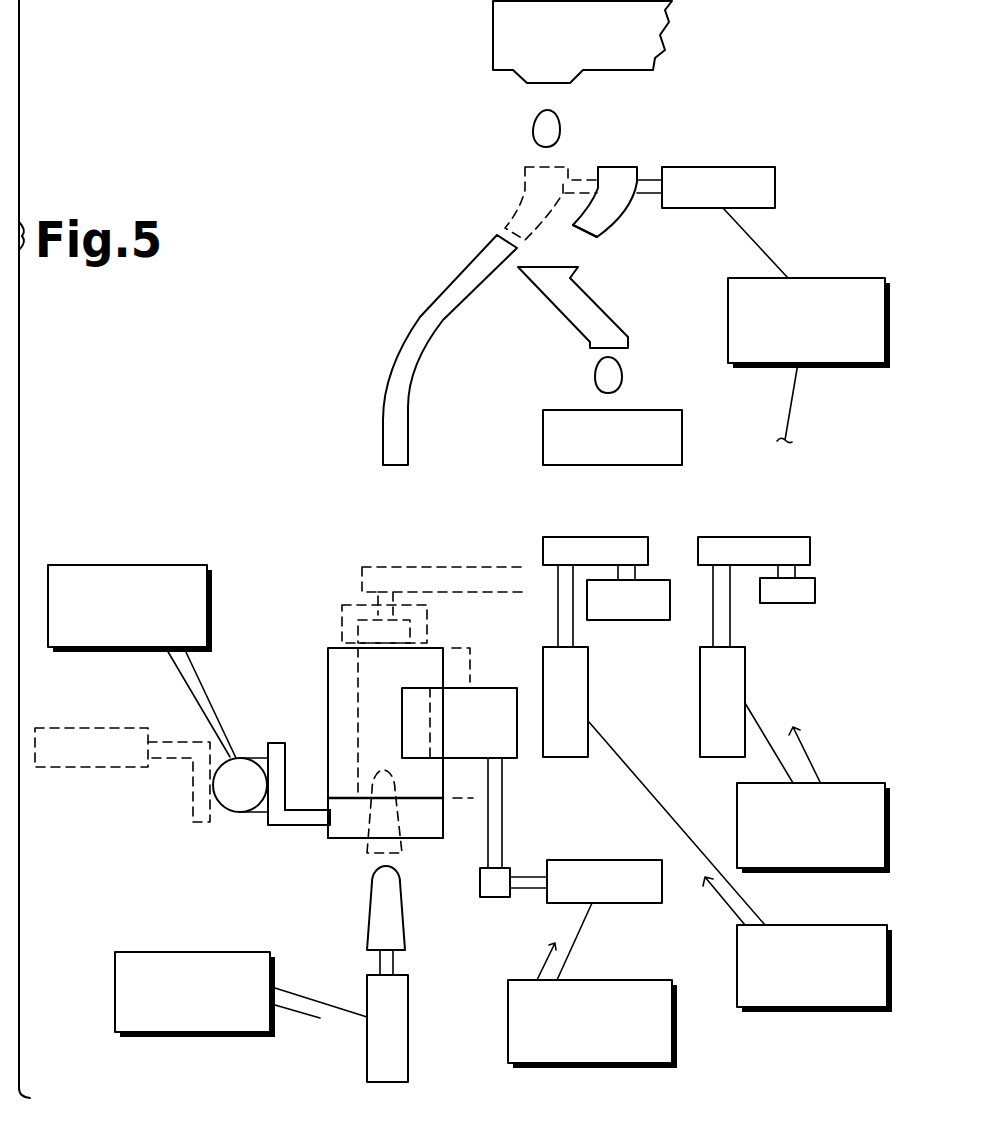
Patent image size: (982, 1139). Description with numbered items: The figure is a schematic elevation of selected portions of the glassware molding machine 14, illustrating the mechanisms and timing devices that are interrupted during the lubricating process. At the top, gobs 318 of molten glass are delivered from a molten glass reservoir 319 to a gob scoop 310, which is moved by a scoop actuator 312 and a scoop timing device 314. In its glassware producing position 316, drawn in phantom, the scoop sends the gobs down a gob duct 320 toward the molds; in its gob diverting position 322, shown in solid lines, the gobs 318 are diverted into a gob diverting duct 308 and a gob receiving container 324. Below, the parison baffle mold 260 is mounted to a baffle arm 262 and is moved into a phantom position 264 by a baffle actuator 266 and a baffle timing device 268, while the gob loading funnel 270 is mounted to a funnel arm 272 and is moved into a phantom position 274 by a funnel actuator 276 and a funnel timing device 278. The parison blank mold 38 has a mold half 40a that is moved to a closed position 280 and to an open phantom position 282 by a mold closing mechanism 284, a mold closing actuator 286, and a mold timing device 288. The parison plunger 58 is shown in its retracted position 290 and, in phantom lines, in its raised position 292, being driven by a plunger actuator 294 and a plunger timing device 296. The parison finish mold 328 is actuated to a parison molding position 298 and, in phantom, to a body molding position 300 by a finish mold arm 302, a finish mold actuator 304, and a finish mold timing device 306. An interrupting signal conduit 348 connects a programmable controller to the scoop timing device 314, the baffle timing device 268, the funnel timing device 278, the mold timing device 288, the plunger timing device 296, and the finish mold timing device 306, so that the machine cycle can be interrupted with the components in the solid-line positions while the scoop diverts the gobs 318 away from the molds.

The glassware molding machine 14 is at (236, 570).
The parison blank mold 38 is at (328, 677).
The mold half 40a is at (443, 663).
The parison plunger 58 is at (352, 913).
The parison baffle mold 260 is at (817, 588).
The baffle arm 262 is at (772, 537).
The phantom position 264 is at (410, 627).
The baffle actuator 266 is at (745, 675).
The baffle timing device 268 is at (865, 782).
The gob loading funnel 270 is at (635, 620).
The funnel arm 272 is at (615, 537).
The phantom position 274 is at (342, 615).
The funnel actuator 276 is at (590, 702).
The funnel timing device 278 is at (837, 923).
The closed position 280 is at (445, 770).
The open phantom position 282 is at (473, 798).
The mold closing mechanism 284 is at (503, 848).
The mold closing actuator 286 is at (640, 860).
The mold timing device 288 is at (637, 980).
The retracted position 290 is at (403, 922).
The raised position 292 is at (365, 853).
The plunger actuator 294 is at (408, 1020).
The plunger timing device 296 is at (215, 950).
The parison molding position 298 is at (418, 838).
The body molding position 300 is at (118, 770).
The finish mold arm 302 is at (313, 810).
The finish mold actuator 304 is at (238, 813).
The finish mold timing device 306 is at (123, 652).
The gob diverting duct 308 is at (620, 327).
The gob scoop 310 is at (625, 232).
The scoop actuator 312 is at (728, 200).
The scoop timing device 314 is at (850, 277).
The glassware producing position 316 is at (525, 172).
The gobs of molten glass 318 is at (560, 118).
The molten glass reservoir 319 is at (586, 47).
The gob duct 320 is at (410, 332).
The gob diverting position 322 is at (599, 240).
The gob receiving container 324 is at (621, 452).
The parison finish mold 328 is at (330, 833).
The interrupting signal conduit 348 is at (795, 402).